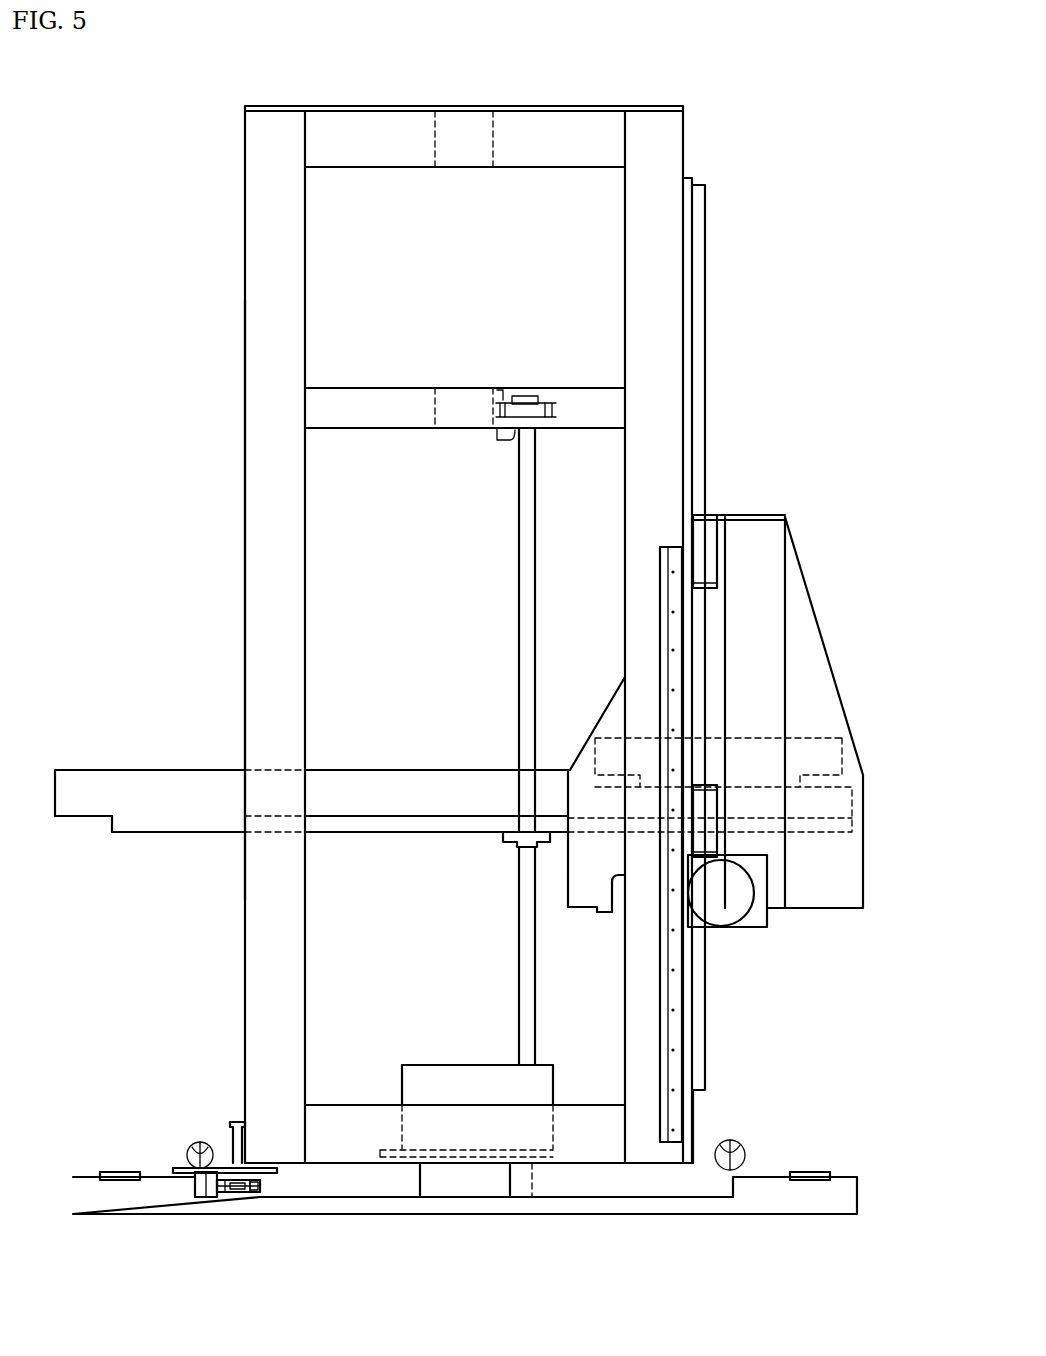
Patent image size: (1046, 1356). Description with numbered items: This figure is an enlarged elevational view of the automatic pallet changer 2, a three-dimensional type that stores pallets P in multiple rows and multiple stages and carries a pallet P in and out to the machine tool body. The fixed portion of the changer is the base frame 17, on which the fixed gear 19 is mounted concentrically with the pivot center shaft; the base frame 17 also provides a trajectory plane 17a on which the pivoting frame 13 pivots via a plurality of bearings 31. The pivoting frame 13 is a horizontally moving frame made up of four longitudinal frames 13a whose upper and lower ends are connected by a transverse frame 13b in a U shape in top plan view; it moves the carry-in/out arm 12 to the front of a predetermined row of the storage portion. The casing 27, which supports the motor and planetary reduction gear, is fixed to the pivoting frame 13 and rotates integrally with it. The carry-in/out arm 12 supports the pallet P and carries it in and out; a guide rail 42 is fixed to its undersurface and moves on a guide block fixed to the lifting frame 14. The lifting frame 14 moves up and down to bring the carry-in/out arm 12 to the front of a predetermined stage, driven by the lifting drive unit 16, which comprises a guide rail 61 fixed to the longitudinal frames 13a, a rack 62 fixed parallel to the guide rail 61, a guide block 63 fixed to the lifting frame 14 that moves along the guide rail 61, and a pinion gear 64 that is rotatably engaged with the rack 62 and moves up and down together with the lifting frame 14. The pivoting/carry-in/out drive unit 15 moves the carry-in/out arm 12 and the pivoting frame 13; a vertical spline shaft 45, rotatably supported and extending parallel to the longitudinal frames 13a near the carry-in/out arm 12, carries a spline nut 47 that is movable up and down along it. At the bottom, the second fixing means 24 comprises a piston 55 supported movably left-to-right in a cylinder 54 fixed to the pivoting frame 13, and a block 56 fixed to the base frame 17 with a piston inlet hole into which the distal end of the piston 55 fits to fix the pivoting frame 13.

The automatic pallet changer 2 is at (757, 128).
The carry-in/out arm 12 is at (130, 768).
The pivoting frame 13 is at (246, 497).
The longitudinal frames 13a is at (256, 583).
The transverse frame 13b is at (343, 1125).
The lifting frame 14 is at (820, 618).
The pivoting/carry-in/out drive unit 15 is at (545, 1060).
The lifting drive unit 16 is at (757, 938).
The base frame 17 is at (855, 1177).
The trajectory plane 17a is at (118, 1170).
The fixed gear 19 is at (532, 1197).
The second fixing means 24 is at (215, 1197).
The casing 27 is at (440, 1065).
The bearings 31 is at (742, 1148).
The guide rail 42 is at (175, 833).
The spline shaft 45 is at (519, 597).
The spline nut 47 is at (510, 842).
The cylinder 54 is at (237, 1197).
The piston 55 is at (255, 1197).
The block 56 is at (200, 1197).
The guide rail 61 is at (700, 286).
The rack 62 is at (678, 1057).
The guide block 63 is at (708, 535).
The pinion gear 64 is at (722, 912).
The pallet P is at (838, 740).